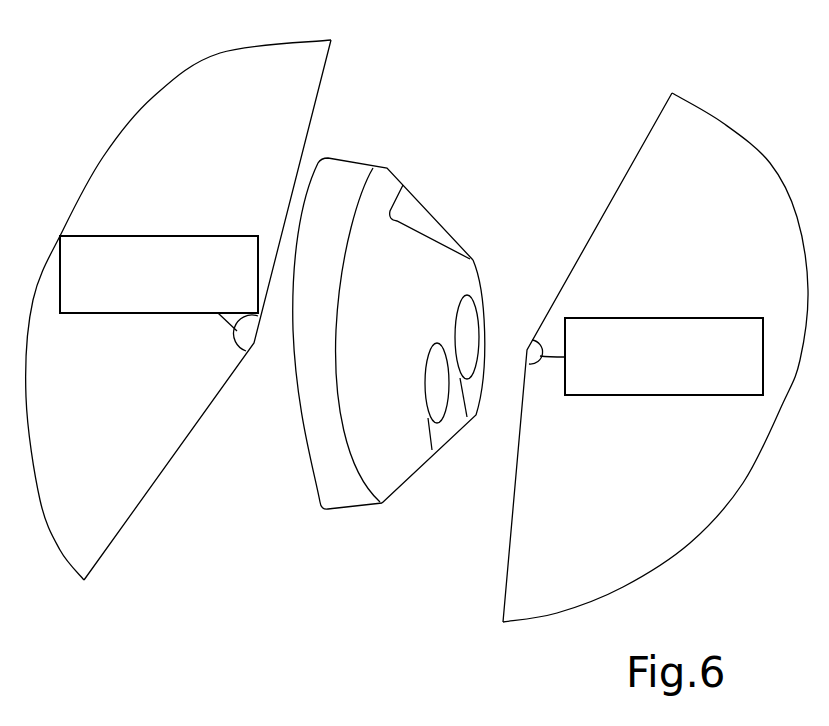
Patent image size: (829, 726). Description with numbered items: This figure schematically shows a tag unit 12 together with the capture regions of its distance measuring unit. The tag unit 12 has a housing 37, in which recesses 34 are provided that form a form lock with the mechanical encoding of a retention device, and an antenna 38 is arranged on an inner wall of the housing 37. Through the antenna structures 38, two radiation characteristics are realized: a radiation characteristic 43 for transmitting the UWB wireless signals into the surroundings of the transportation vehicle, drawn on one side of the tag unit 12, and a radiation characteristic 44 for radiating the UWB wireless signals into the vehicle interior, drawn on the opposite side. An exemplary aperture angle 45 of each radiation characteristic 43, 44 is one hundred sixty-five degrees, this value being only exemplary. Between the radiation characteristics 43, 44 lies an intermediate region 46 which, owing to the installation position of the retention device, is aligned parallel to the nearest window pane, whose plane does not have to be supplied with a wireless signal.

The tag unit 12 is at (384, 504).
The recesses 34 is at (432, 450).
The housing 37 is at (408, 343).
The antenna 38 is at (412, 210).
The radiation characteristic 43 is at (331, 57).
The radiation characteristic 44 is at (600, 212).
The aperture angle 45 is at (185, 236).
The intermediate region 46 is at (537, 80).